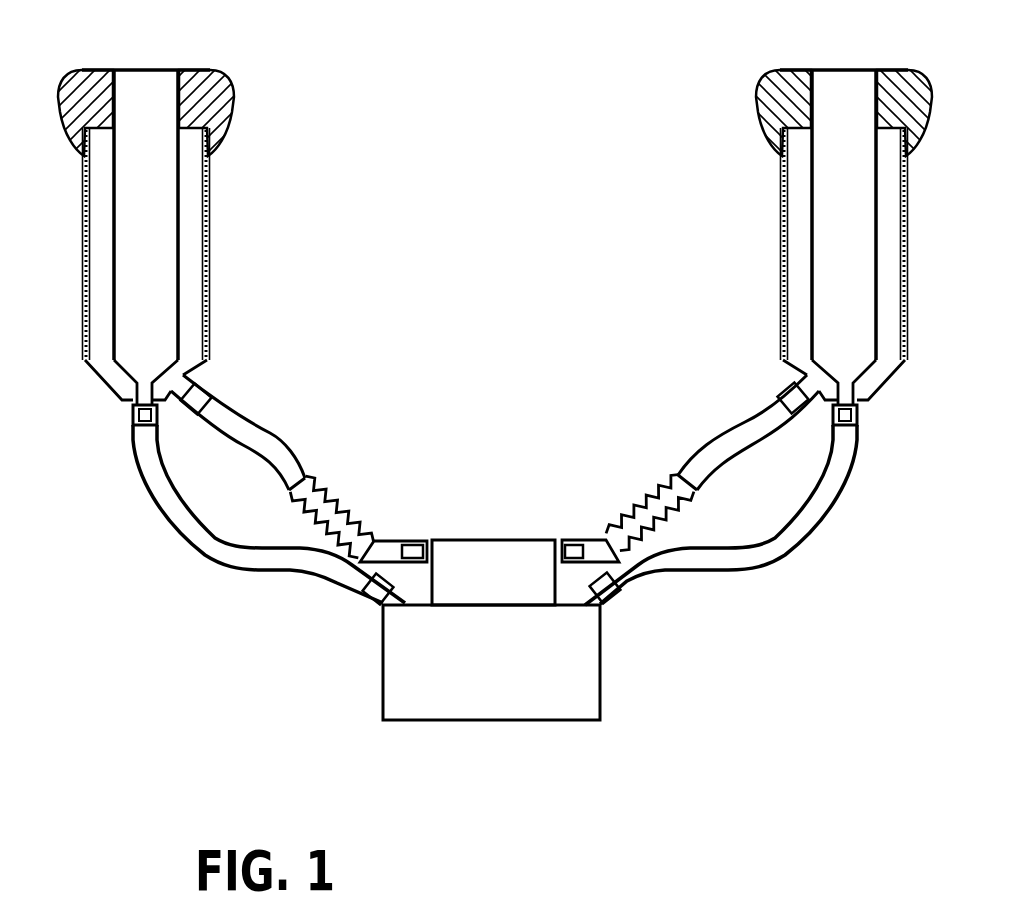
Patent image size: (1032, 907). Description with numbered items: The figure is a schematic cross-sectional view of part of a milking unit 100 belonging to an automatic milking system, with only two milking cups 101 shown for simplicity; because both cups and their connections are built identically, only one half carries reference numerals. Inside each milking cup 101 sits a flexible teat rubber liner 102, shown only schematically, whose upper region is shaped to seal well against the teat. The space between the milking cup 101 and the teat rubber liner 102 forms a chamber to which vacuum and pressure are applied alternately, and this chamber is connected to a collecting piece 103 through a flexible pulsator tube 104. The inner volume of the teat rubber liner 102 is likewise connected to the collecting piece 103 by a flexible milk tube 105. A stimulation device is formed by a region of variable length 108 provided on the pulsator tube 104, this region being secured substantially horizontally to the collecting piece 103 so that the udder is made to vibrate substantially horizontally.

The milking unit 100 is at (575, 111).
The milking cup 101 is at (210, 183).
The teat rubber liner 102 is at (188, 243).
The collecting piece 103 is at (487, 627).
The pulsator tube 104 is at (272, 440).
The milk tube 105 is at (270, 563).
The region of variable length 108 is at (343, 514).